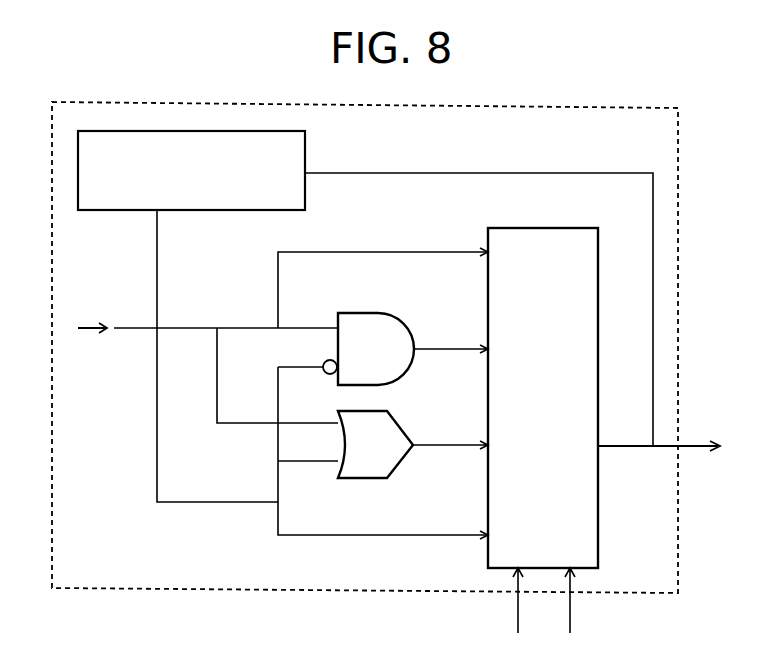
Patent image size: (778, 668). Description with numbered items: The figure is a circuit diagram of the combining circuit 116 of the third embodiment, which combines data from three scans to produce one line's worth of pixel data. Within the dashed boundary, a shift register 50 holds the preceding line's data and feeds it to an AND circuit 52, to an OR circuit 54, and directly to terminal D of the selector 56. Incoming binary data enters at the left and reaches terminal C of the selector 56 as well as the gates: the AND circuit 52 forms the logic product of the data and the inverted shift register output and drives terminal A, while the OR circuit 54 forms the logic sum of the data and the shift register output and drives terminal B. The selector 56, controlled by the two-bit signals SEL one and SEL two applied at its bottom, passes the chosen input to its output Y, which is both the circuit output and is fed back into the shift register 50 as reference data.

The combining circuit 116 is at (632, 106).
The shift register 50 is at (305, 143).
The AND circuit 52 is at (400, 313).
The OR circuit 54 is at (403, 426).
The selector 56 is at (590, 228).